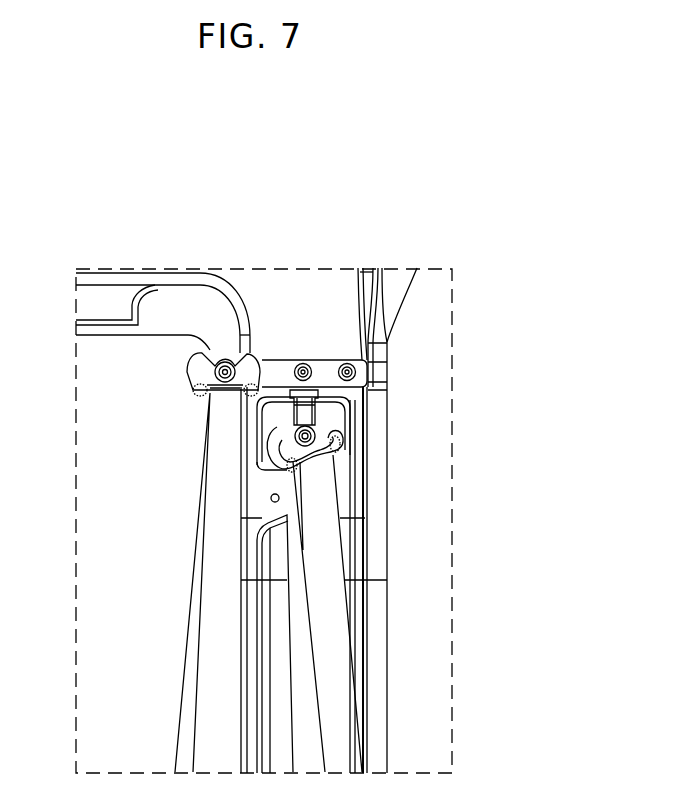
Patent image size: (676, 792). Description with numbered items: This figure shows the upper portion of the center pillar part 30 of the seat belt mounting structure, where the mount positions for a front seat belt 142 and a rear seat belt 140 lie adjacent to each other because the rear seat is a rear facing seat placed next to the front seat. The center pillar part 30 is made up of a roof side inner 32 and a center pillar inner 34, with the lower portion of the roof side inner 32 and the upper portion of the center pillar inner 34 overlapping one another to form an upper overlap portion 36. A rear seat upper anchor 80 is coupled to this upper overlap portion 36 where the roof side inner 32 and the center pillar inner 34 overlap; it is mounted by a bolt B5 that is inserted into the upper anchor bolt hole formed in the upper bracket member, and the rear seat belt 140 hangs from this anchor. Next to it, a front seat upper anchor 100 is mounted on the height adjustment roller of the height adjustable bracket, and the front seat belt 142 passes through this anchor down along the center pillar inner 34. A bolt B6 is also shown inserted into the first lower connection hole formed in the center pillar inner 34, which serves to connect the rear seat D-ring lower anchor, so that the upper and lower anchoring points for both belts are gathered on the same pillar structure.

The center pillar part 30 is at (287, 250).
The roof side inner 32 is at (350, 318).
The center pillar inner 34 is at (377, 523).
The upper overlap portion 36 is at (393, 338).
The rear seat upper anchor 80 is at (197, 373).
The front seat upper anchor 100 is at (330, 430).
The rear seat belt 140 is at (186, 623).
The front seat belt 142 is at (340, 722).
The bolt B5 is at (223, 361).
The bolt B6 is at (303, 362).